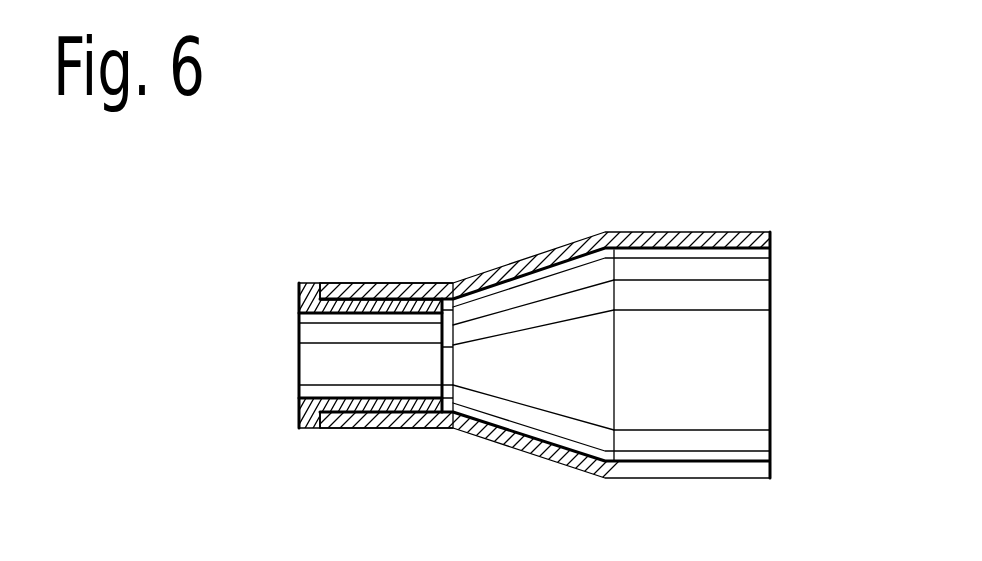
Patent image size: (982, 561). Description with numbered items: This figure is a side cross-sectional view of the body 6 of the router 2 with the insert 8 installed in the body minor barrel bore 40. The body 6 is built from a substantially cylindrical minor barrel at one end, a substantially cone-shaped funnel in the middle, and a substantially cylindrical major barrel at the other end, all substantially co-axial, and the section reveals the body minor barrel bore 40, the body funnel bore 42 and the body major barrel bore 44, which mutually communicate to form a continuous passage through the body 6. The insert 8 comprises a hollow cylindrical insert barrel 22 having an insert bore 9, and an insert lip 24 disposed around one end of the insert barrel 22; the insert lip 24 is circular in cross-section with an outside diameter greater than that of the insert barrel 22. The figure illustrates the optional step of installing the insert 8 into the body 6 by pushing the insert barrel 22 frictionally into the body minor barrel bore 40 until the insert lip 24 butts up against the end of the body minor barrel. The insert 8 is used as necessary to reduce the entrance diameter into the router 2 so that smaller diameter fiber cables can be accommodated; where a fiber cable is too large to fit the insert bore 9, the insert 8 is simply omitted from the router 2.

The router 2 is at (447, 100).
The body 6 is at (590, 236).
The insert 8 is at (298, 297).
The insert bore 9 is at (313, 368).
The insert barrel 22 is at (372, 405).
The insert lip 24 is at (308, 288).
The body minor barrel bore 40 is at (393, 297).
The body funnel bore 42 is at (558, 343).
The body major barrel bore 44 is at (682, 340).